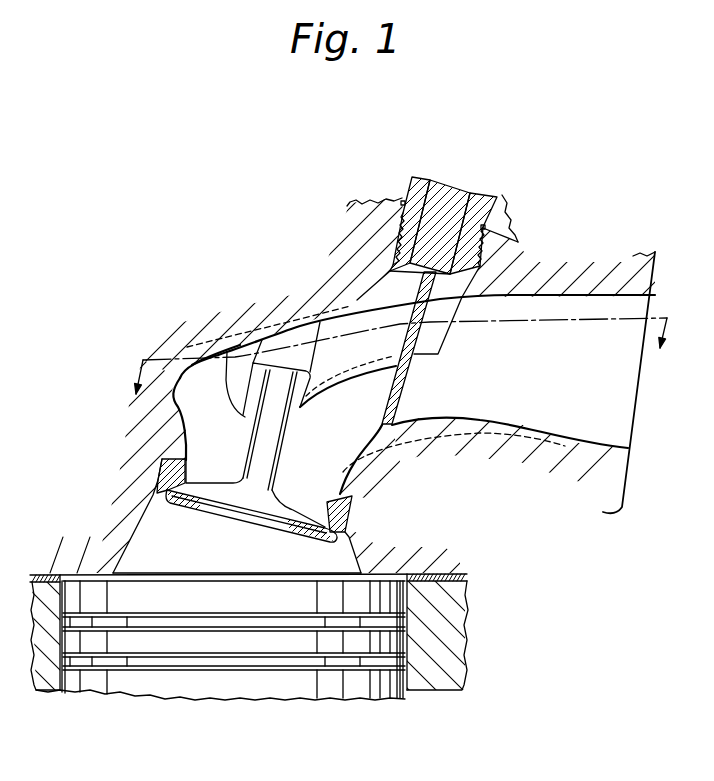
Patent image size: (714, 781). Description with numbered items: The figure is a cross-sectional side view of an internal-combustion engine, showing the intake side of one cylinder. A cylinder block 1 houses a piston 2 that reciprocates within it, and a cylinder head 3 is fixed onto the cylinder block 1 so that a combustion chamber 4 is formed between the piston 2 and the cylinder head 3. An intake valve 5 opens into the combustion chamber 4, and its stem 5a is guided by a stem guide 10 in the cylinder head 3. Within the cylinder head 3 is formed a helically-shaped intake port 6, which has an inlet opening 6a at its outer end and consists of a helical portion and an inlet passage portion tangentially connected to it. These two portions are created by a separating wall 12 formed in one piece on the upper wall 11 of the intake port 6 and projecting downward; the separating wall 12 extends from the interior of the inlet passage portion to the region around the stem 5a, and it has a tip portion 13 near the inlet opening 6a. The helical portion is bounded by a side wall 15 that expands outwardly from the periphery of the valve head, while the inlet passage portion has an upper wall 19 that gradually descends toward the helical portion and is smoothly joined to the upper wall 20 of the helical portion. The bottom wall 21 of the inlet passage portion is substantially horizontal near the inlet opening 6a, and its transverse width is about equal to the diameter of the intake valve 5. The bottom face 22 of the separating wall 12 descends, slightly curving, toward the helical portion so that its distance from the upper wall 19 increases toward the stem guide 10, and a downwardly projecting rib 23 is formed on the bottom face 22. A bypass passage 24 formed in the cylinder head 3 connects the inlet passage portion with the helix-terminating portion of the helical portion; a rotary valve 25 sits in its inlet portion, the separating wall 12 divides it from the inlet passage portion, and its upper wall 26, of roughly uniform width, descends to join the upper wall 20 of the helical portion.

The cylinder block 1 is at (460, 618).
The piston 2 is at (380, 688).
The cylinder head 3 is at (600, 272).
The combustion chamber 4 is at (198, 548).
The intake valve 5 is at (233, 482).
The stem 5a is at (272, 458).
The helically-shaped intake port 6 is at (557, 386).
The inlet opening 6a is at (640, 398).
The stem guide 10 is at (287, 338).
The upper wall 11 is at (528, 291).
The separating wall 12 is at (294, 390).
The tip portion 13 is at (460, 331).
The side wall 15 is at (170, 402).
The upper wall 19 is at (567, 293).
The upper wall 20 is at (204, 356).
The bottom wall 21 is at (486, 422).
The bottom face 22 is at (427, 358).
The rib 23 is at (348, 391).
The bypass passage 24 is at (360, 356).
The rotary valve 25 is at (410, 377).
The upper wall 26 is at (367, 308).